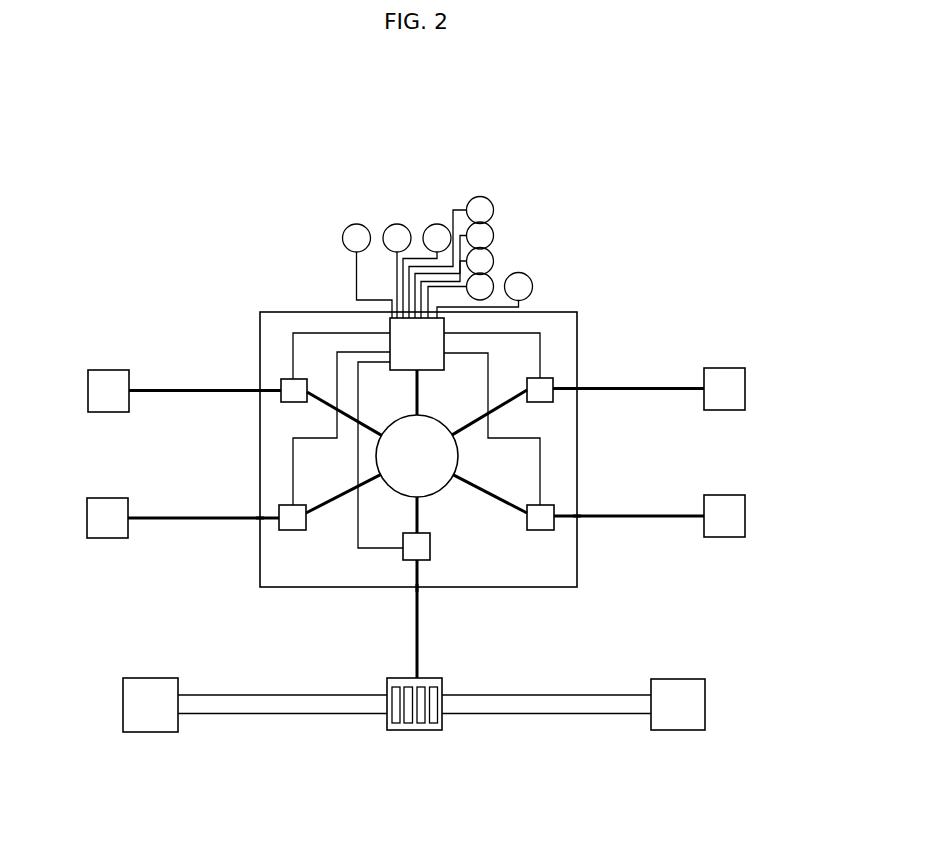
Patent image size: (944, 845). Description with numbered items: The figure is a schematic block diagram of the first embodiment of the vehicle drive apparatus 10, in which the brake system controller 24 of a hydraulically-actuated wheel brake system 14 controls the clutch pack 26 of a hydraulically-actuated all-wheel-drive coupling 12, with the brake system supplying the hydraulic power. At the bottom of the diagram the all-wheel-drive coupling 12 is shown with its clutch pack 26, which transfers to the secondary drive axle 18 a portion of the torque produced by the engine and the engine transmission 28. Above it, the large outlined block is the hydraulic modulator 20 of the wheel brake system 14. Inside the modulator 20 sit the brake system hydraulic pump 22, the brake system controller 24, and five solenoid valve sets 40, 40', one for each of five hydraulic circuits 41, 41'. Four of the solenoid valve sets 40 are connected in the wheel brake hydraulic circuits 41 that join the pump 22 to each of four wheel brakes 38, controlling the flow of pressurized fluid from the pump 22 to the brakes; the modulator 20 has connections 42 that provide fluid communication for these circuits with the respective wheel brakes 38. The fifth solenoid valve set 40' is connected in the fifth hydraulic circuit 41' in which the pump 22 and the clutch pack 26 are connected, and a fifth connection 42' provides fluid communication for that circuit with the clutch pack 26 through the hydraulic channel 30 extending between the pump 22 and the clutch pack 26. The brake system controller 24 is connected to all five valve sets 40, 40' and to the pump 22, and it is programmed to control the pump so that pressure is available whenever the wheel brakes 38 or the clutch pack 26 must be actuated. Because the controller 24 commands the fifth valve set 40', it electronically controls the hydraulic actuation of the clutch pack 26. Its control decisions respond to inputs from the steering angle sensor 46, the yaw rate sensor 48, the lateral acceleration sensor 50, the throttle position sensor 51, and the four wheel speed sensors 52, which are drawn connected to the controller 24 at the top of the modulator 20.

The vehicle drive apparatus 10 is at (557, 134).
The all-wheel-drive coupling 12 is at (391, 737).
The wheel brake system 14 is at (461, 419).
The hydraulic modulator 20 is at (570, 305).
The secondary drive axle 18 is at (673, 720).
The brake system hydraulic pump 22 is at (417, 451).
The brake system controller 24 is at (417, 344).
The clutch pack 26 is at (433, 720).
The engine transmission 28 is at (155, 727).
The hydraulic channel 30 is at (419, 665).
The wheel brakes 38 is at (100, 398).
The solenoid valve sets 40 is at (408, 480).
The fifth solenoid valve set 40' is at (446, 559).
The wheel brake hydraulic circuits 41 is at (416, 417).
The fifth hydraulic circuit 41' is at (379, 619).
The connections 42 is at (405, 417).
The fifth connection 42' is at (454, 610).
The steering angle sensor 46 is at (353, 228).
The yaw rate sensor 48 is at (393, 228).
The lateral acceleration sensor 50 is at (438, 230).
The throttle position sensor 51 is at (524, 284).
The wheel speed sensors 52 is at (486, 286).